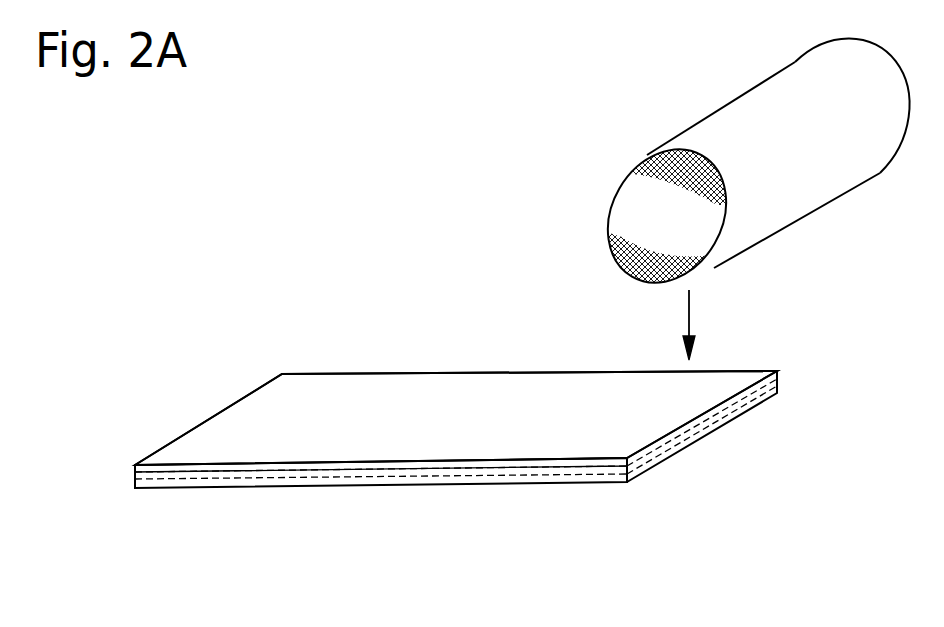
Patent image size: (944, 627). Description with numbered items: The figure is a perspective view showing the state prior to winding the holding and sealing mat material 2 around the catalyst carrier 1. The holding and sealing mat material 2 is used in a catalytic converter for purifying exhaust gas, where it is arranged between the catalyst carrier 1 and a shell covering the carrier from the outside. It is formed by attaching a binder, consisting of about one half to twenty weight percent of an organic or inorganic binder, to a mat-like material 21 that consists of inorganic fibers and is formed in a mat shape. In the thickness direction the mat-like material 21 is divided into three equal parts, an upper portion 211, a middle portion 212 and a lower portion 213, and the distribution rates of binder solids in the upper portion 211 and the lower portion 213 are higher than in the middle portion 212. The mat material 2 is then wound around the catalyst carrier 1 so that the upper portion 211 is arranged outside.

The catalyst carrier 1 is at (790, 177).
The holding and sealing mat material 2 is at (487, 322).
The mat-like material 21 is at (383, 412).
The upper portion 211 is at (443, 483).
The middle portion 212 is at (365, 470).
The lower portion 213 is at (260, 466).